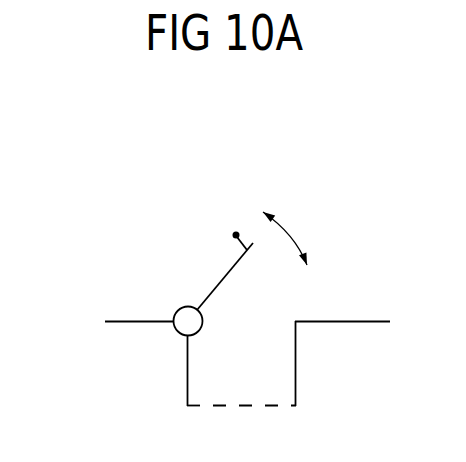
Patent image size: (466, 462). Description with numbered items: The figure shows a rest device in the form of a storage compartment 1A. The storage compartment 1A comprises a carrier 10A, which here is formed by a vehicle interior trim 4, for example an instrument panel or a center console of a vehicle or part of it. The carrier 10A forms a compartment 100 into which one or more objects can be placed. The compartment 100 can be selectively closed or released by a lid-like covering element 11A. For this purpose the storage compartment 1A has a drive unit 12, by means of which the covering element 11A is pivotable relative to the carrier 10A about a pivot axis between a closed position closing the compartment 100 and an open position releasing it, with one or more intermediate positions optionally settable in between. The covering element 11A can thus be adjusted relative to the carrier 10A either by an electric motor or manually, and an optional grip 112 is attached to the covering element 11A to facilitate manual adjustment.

The storage compartment 1A is at (90, 262).
The drive unit 12 is at (170, 342).
The covering element 11A is at (218, 283).
The grip 112 is at (246, 233).
The compartment 100 is at (267, 391).
The vehicle interior trim 4 is at (364, 280).
The carrier 10A is at (362, 322).